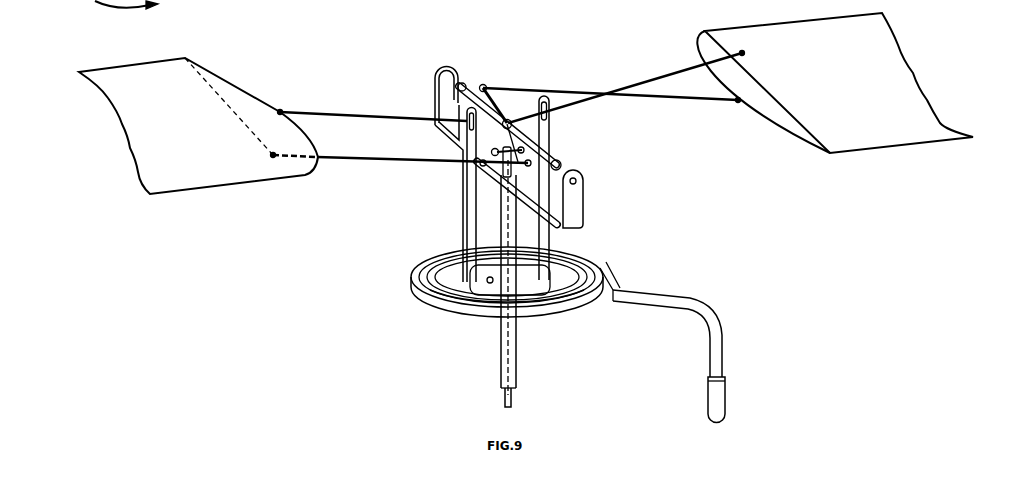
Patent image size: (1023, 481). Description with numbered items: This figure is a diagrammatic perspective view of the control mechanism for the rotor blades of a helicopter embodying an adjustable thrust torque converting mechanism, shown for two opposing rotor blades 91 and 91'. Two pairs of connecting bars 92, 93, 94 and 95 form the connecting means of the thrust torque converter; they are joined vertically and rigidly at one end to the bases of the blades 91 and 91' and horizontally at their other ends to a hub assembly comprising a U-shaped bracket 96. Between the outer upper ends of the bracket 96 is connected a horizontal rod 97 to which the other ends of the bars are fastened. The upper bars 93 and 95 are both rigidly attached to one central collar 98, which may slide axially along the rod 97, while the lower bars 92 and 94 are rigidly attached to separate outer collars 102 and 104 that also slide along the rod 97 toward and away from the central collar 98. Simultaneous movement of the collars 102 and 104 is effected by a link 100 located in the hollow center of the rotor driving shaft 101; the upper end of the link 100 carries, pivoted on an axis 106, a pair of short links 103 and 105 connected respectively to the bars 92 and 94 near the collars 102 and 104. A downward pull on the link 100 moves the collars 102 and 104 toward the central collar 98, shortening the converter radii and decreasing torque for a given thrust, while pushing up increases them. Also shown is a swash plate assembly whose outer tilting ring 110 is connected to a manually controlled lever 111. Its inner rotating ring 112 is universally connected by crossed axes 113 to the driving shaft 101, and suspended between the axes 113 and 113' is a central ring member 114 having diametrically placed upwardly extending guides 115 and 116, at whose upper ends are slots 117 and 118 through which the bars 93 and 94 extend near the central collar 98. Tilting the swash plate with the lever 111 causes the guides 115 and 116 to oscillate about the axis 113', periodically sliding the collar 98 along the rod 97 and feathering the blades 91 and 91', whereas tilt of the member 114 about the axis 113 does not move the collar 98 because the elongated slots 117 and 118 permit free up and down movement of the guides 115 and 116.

The rotor blade 91 is at (198, 126).
The rotor blade 91' is at (835, 83).
The connecting bar 92 is at (377, 160).
The connecting bar 93 is at (371, 112).
The connecting bar 94 is at (568, 92).
The connecting bar 95 is at (664, 79).
The U-shaped bracket 96 is at (592, 197).
The horizontal rod 97 is at (527, 150).
The central collar 98 is at (517, 112).
The link 100 is at (505, 398).
The rotor driving shaft 101 is at (500, 330).
The outer collar 102 is at (562, 163).
The short link 103 is at (476, 167).
The outer collar 104 is at (469, 80).
The short link 105 is at (496, 100).
The axis 106 is at (506, 151).
The outer tilting ring 110 is at (604, 271).
The manually controlled lever 111 is at (724, 397).
The inner rotating ring 112 is at (428, 272).
The crossed axis 113 is at (496, 269).
The axis 113' is at (476, 275).
The central ring member 114 is at (455, 299).
The guide 115 is at (467, 203).
The guide 116 is at (548, 236).
The slot 117 is at (455, 112).
The slot 118 is at (541, 96).